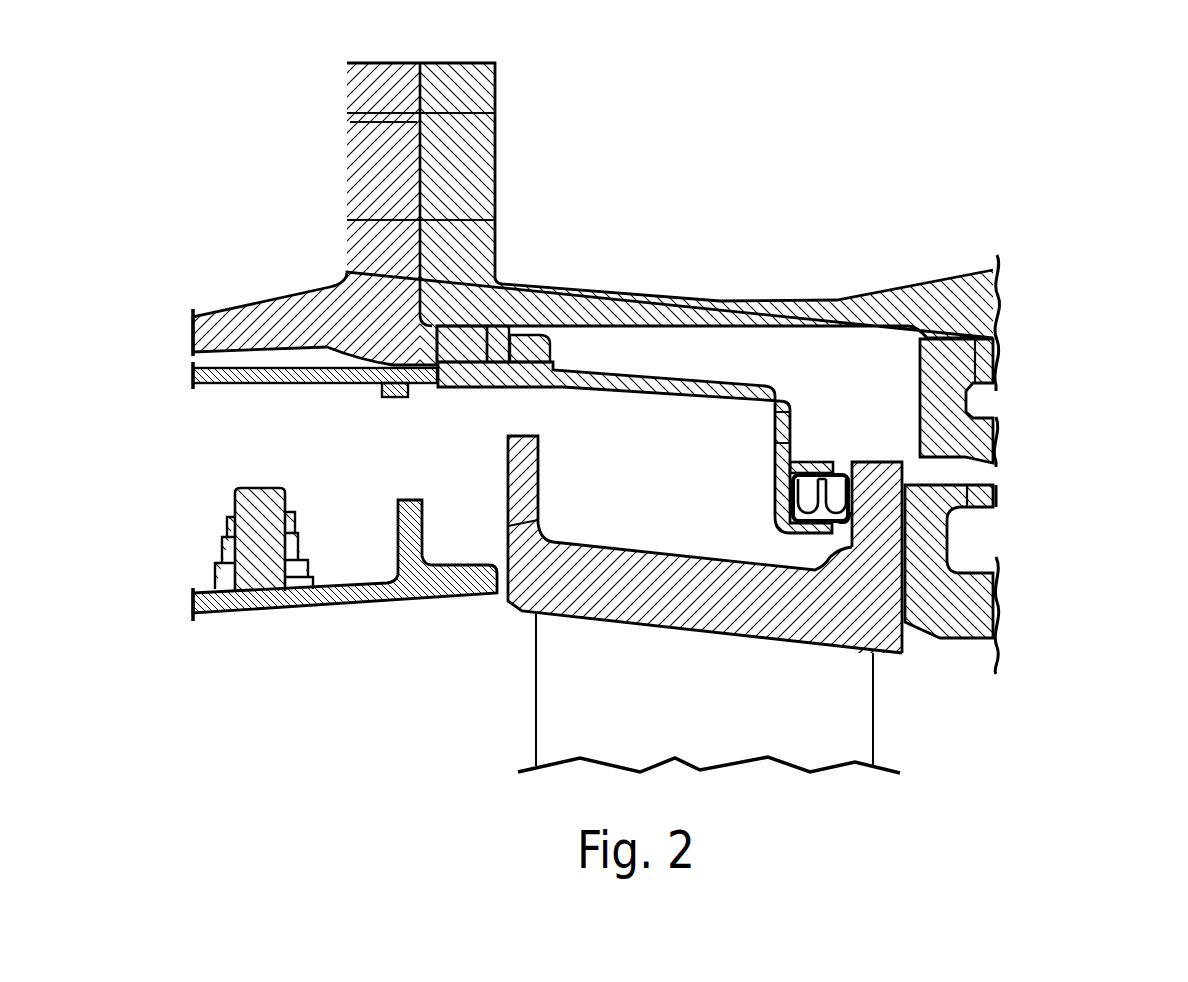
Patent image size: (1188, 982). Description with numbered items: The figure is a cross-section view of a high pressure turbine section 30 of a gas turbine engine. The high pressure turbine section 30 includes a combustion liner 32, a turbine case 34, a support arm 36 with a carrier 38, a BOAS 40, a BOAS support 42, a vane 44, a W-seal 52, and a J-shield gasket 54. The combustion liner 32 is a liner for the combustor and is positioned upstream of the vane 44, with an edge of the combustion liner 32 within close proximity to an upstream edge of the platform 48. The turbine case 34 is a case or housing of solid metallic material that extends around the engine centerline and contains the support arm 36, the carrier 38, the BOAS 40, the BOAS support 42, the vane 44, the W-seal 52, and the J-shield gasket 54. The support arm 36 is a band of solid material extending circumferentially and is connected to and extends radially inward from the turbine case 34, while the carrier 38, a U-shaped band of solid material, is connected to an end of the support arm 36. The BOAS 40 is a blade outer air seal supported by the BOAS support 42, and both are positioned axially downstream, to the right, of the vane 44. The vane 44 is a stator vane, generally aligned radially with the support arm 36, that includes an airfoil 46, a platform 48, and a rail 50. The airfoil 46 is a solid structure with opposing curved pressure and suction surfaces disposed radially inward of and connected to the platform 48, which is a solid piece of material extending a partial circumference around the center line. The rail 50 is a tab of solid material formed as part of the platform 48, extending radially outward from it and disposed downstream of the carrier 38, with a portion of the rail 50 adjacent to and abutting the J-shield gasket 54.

The high pressure turbine section 30 is at (757, 178).
The combustion liner 32 is at (407, 600).
The turbine case 34 is at (652, 296).
The support arm 36 is at (593, 370).
The carrier 38 is at (816, 461).
The BOAS 40 is at (958, 365).
The BOAS support 42 is at (925, 541).
The vane 44 is at (521, 607).
The airfoil 46 is at (533, 696).
The platform 48 is at (875, 627).
The rail 50 is at (877, 470).
The W-seal 52 is at (787, 488).
The J-shield gasket 54 is at (845, 473).